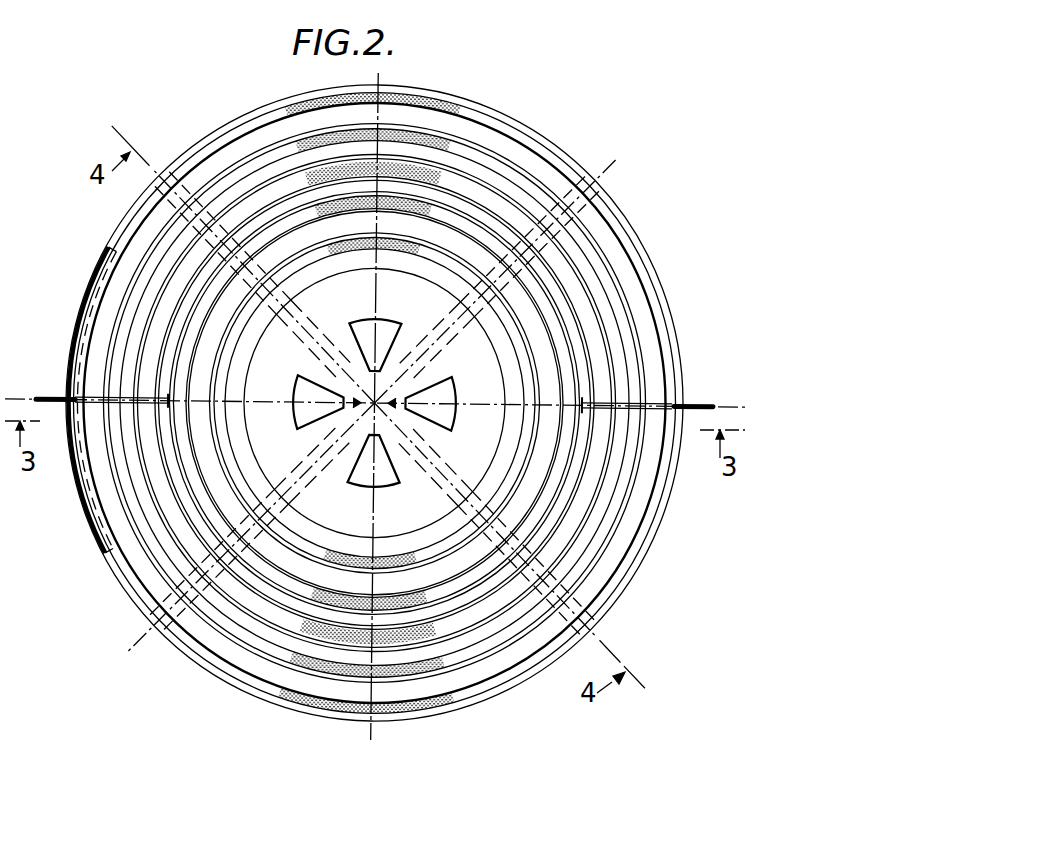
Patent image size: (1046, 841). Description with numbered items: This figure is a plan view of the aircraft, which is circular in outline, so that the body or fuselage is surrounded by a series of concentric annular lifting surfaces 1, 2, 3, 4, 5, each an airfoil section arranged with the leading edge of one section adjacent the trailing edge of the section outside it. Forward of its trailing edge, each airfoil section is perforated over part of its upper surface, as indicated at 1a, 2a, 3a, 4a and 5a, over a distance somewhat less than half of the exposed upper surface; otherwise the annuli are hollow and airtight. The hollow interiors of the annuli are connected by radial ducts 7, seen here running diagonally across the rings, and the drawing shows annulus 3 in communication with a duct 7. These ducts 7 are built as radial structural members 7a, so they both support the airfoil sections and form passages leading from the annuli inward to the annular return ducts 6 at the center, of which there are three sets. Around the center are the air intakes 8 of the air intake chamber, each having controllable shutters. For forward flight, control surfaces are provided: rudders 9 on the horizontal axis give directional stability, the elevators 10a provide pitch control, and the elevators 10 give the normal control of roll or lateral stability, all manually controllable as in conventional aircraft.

The annular lifting surface 1 is at (502, 667).
The perforated portion 1a is at (445, 697).
The annular lifting surface 2 is at (603, 505).
The perforated portion 2a is at (602, 540).
The annular lifting surface 3 is at (543, 268).
The perforated portion 3a is at (567, 275).
The annular lifting surface 4 is at (518, 305).
The perforated portion 4a is at (557, 338).
The annular lifting surface 5 is at (513, 433).
The perforated portion 5a is at (517, 467).
The annular return duct 6 is at (274, 443).
The radial duct 7 is at (183, 167).
The radial structural member 7a is at (330, 338).
The air intake 8 is at (392, 351).
The rudder 9 is at (50, 400).
The elevator 10 is at (92, 288).
The elevator 10a is at (74, 332).